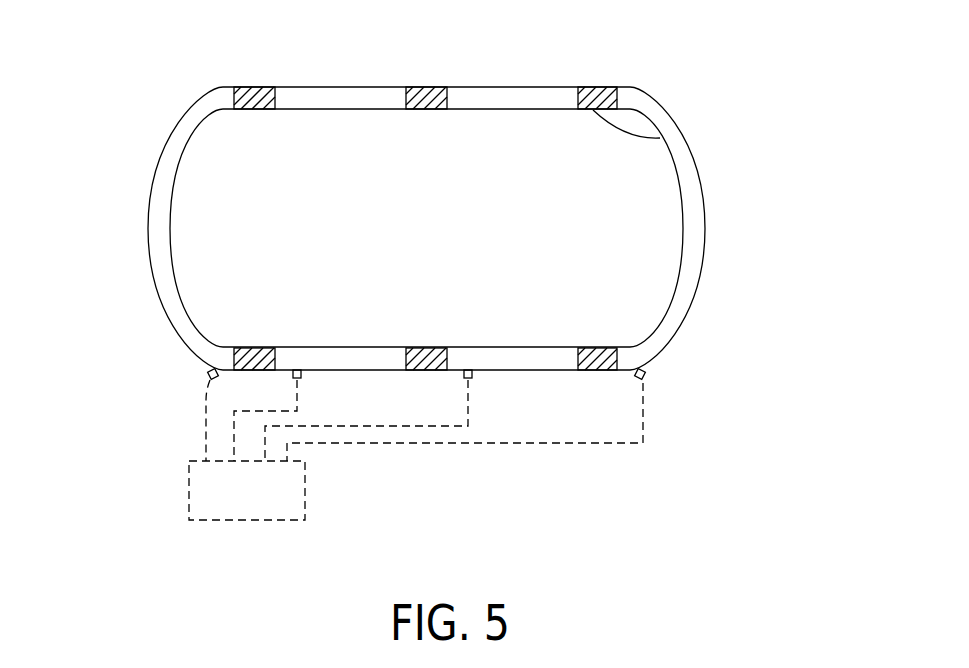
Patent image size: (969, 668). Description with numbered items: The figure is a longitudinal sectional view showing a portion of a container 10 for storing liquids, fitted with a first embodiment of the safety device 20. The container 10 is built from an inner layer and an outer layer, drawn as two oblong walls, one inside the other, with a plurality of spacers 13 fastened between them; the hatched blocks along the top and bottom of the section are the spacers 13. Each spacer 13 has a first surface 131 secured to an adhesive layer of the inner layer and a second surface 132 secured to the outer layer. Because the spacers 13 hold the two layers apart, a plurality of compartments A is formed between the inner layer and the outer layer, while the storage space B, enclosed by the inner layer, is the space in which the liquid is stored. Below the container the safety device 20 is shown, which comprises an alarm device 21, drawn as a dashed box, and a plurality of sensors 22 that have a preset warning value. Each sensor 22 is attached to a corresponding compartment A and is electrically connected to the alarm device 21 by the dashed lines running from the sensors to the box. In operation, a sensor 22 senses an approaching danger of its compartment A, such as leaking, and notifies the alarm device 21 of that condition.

The container 10 is at (411, 189).
The spacer 13 is at (472, 189).
The first surface 131 is at (643, 138).
The second surface 132 is at (602, 87).
The compartment A is at (670, 328).
The storage space B is at (655, 247).
The safety device 20 is at (372, 495).
The alarm device 21 is at (305, 490).
The sensor 22 is at (208, 372).